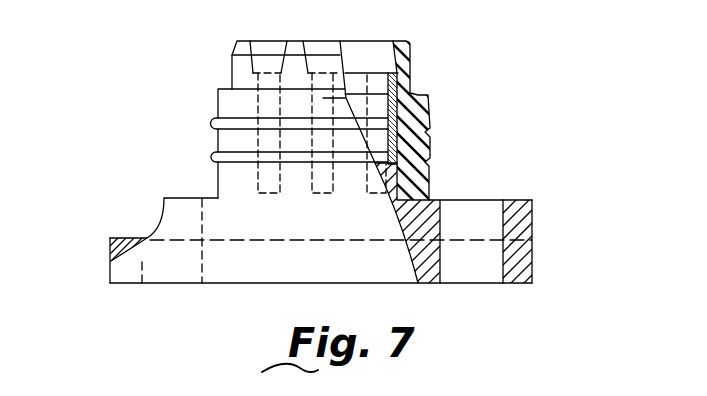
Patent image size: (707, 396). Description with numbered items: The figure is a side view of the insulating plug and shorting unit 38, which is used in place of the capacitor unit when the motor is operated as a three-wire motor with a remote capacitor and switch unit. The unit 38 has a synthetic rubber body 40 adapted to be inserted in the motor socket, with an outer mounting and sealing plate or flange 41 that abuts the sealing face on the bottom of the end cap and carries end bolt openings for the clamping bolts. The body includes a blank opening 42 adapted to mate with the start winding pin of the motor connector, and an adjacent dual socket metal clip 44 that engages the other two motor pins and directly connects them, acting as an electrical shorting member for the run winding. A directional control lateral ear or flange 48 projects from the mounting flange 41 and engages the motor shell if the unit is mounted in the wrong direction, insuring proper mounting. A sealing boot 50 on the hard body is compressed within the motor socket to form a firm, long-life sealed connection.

The insulating plug and shorting unit 38 is at (481, 202).
The synthetic rubber body 40 is at (412, 60).
The outer mounting and sealing plate or flange 41 is at (534, 252).
The blank opening 42 is at (257, 105).
The dual socket metal clip 44 is at (391, 105).
The directional control lateral ear or flange 48 is at (110, 241).
The sealing boot 50 is at (429, 139).